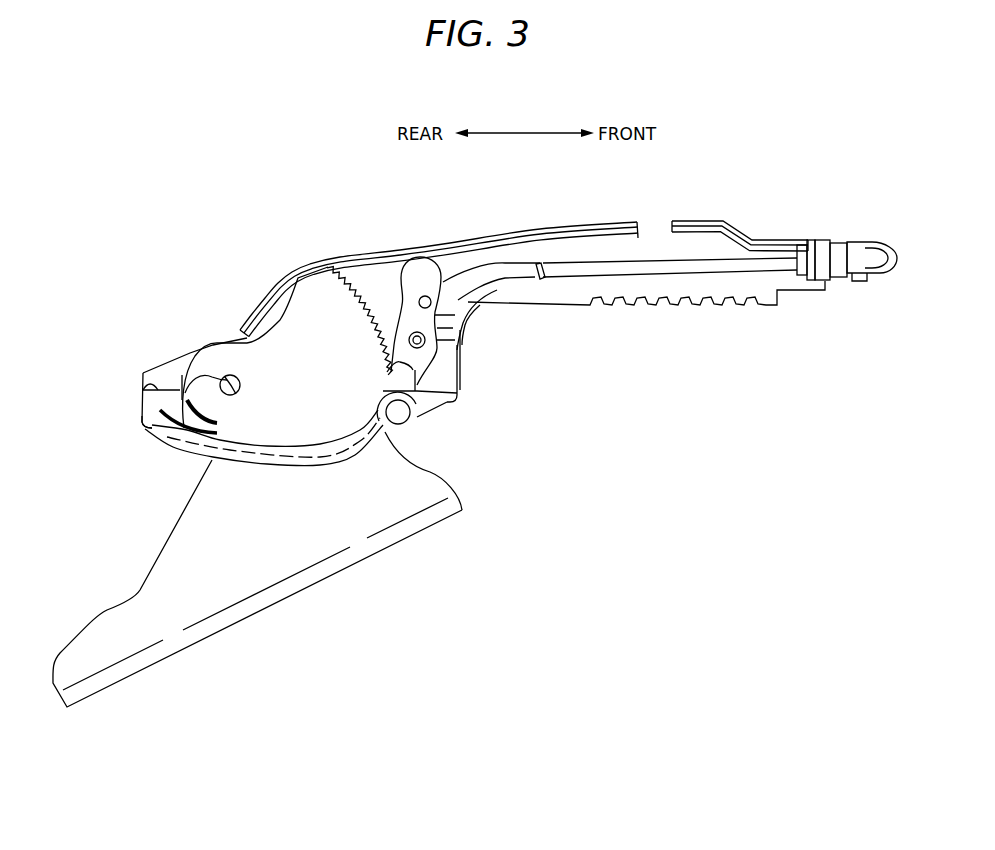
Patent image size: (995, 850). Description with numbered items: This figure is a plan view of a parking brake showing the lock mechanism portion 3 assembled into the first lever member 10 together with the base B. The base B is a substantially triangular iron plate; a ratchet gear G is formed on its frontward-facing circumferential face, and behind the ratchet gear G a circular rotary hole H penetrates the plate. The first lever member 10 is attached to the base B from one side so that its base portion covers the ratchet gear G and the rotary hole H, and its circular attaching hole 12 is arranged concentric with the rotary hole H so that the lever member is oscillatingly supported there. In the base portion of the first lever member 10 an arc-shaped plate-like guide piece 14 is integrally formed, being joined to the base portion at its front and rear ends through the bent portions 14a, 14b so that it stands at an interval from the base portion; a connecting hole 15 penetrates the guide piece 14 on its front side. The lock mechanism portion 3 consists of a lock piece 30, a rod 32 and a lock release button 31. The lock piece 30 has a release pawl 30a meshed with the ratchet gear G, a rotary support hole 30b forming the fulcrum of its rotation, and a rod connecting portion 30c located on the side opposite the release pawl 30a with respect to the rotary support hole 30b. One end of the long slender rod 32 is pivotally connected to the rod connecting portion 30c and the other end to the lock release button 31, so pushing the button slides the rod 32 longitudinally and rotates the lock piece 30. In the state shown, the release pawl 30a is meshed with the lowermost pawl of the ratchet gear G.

The first lever member 10 is at (604, 226).
The guide piece 14 is at (158, 439).
The bent portion 14b is at (143, 377).
The rotary hole H is at (142, 422).
The attaching hole 12 is at (231, 375).
The ratchet gear G is at (350, 282).
The lock piece 30 is at (423, 266).
The rod connecting portion 30c is at (432, 302).
The rotary support hole 30b is at (447, 345).
The bent portion 14a is at (457, 378).
The release pawl 30a is at (402, 413).
The connecting hole 15 is at (423, 420).
The rod 32 is at (683, 268).
The lock mechanism portion 3 is at (761, 283).
The lock release button 31 is at (863, 250).
The base B is at (272, 566).